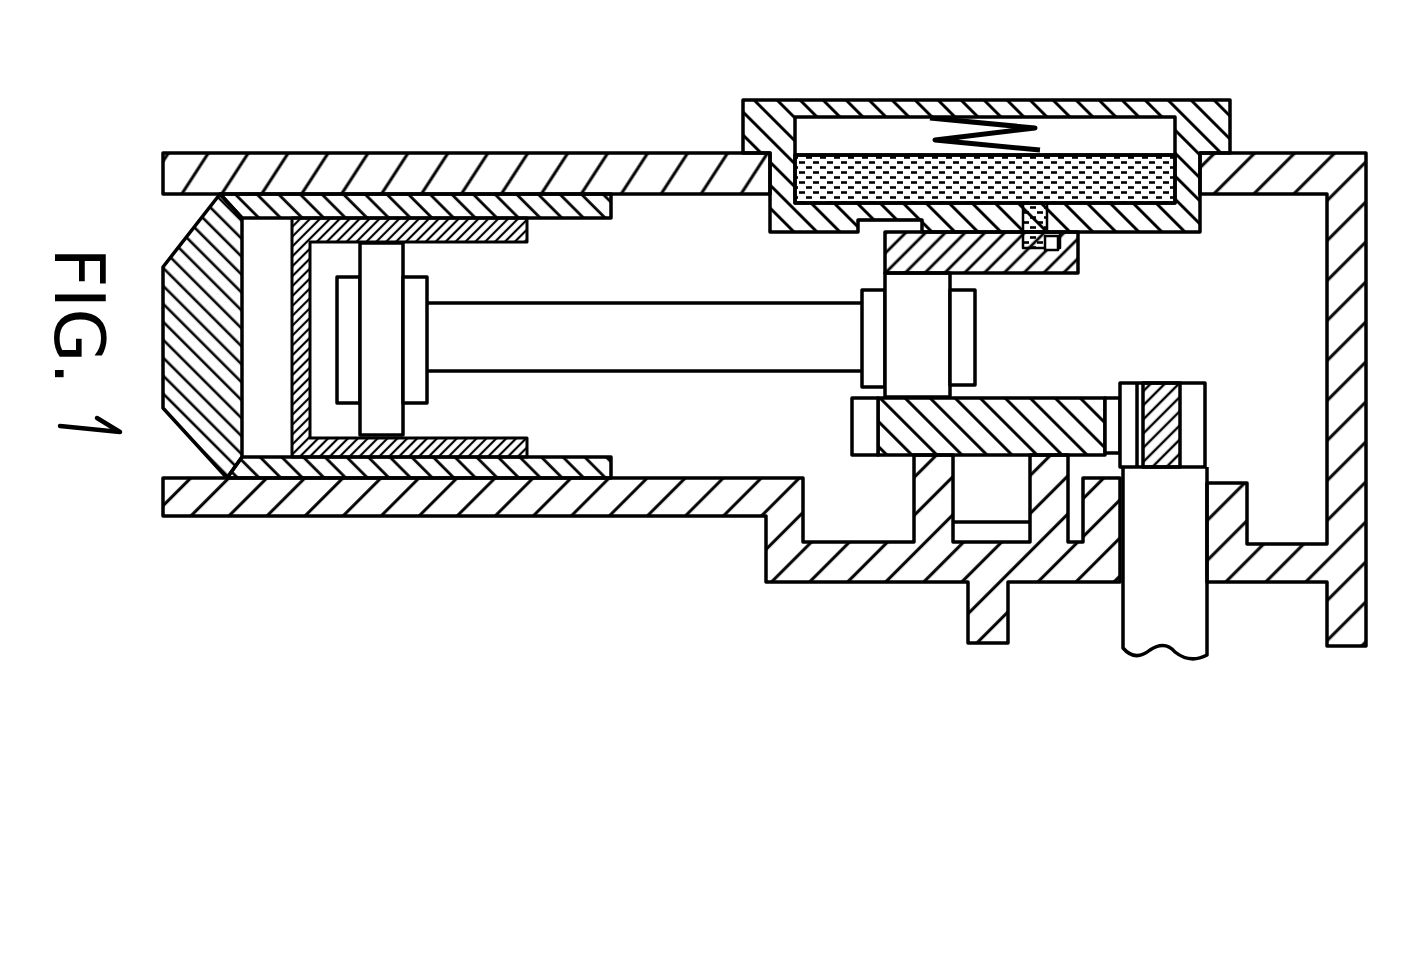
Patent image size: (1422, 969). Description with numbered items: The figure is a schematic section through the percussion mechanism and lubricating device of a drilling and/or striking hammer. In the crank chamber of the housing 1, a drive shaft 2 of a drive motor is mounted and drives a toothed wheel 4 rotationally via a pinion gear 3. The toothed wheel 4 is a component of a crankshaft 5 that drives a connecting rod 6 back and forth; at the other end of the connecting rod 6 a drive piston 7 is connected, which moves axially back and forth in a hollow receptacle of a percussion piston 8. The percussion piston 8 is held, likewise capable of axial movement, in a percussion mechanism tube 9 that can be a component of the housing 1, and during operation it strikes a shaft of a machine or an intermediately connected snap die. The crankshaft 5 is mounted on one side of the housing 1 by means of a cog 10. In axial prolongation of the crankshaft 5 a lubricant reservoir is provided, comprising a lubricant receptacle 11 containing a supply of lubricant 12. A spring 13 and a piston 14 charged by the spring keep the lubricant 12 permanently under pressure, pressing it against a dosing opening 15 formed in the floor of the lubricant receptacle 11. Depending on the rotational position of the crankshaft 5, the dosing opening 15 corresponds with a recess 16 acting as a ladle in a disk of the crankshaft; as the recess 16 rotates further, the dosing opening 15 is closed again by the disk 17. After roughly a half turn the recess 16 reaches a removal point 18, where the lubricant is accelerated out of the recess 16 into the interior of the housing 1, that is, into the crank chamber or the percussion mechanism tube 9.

The housing 1 is at (1355, 315).
The drive shaft 2 is at (1167, 628).
The pinion gear 3 is at (1190, 420).
The toothed wheel 4 is at (872, 445).
The crankshaft 5 is at (912, 448).
The connecting rod 6 is at (671, 345).
The drive piston 7 is at (342, 472).
The percussion piston 8 is at (232, 472).
The percussion mechanism tube 9 is at (435, 498).
The cog 10 is at (1290, 268).
The lubricant receptacle 11 is at (1200, 125).
The lubricant 12 is at (1088, 172).
The spring 13 is at (984, 130).
The piston 14 is at (902, 155).
The dosing opening 15 is at (1046, 262).
The recess 16 is at (1066, 233).
The disk 17 is at (1003, 262).
The removal point 18 is at (873, 226).